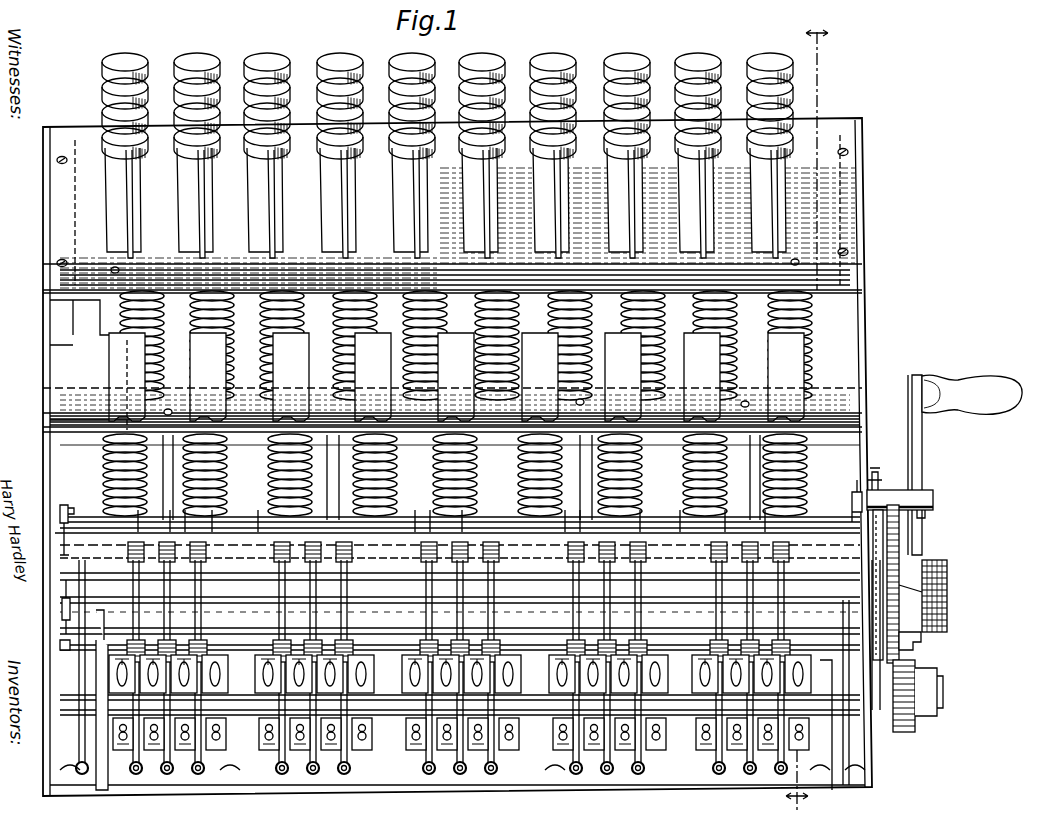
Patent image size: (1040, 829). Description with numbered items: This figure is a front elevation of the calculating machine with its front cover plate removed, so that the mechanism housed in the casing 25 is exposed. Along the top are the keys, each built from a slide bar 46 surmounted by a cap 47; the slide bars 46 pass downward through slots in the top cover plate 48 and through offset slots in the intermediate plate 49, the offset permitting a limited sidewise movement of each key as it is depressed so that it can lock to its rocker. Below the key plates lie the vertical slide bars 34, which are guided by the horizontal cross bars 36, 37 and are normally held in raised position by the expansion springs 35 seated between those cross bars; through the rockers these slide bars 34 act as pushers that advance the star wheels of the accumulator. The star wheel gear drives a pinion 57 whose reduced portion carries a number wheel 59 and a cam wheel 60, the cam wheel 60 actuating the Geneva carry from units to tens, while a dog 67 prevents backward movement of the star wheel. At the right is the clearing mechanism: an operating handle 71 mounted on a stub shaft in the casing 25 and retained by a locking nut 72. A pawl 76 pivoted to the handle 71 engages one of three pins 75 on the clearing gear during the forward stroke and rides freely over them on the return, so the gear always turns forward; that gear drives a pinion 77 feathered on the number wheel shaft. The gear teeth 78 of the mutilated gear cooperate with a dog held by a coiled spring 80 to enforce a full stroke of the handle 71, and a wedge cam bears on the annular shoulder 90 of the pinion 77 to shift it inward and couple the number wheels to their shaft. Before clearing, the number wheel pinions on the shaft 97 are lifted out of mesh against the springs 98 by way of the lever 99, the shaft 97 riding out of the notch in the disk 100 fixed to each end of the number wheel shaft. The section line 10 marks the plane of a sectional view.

The section line 10 is at (807, 411).
The casing 25 is at (866, 296).
The slide bar 34 is at (456, 381).
The expansion spring 35 is at (218, 472).
The horizontal cross bar 36 is at (452, 410).
The horizontal cross bar 37 is at (512, 516).
The slide bar 46 is at (188, 232).
The cap 47 is at (250, 112).
The top cover plate 48 is at (452, 275).
The intermediate plate 49 is at (90, 358).
The pinion 57 is at (256, 780).
The number wheel 59 is at (335, 762).
The cam wheel 60 is at (203, 762).
The dog 67 is at (200, 570).
The operating handle 71 is at (922, 452).
The locking nut 72 is at (947, 565).
The pins 75 is at (920, 650).
The pawl 76 is at (926, 519).
The pinion 77 is at (915, 730).
The gear teeth 78 is at (947, 600).
The coiled spring 80 is at (878, 480).
The annular shoulder 90 is at (878, 712).
The shaft 97 is at (98, 700).
The springs 98 is at (74, 560).
The lever 99 is at (62, 607).
The disk 100 is at (82, 778).